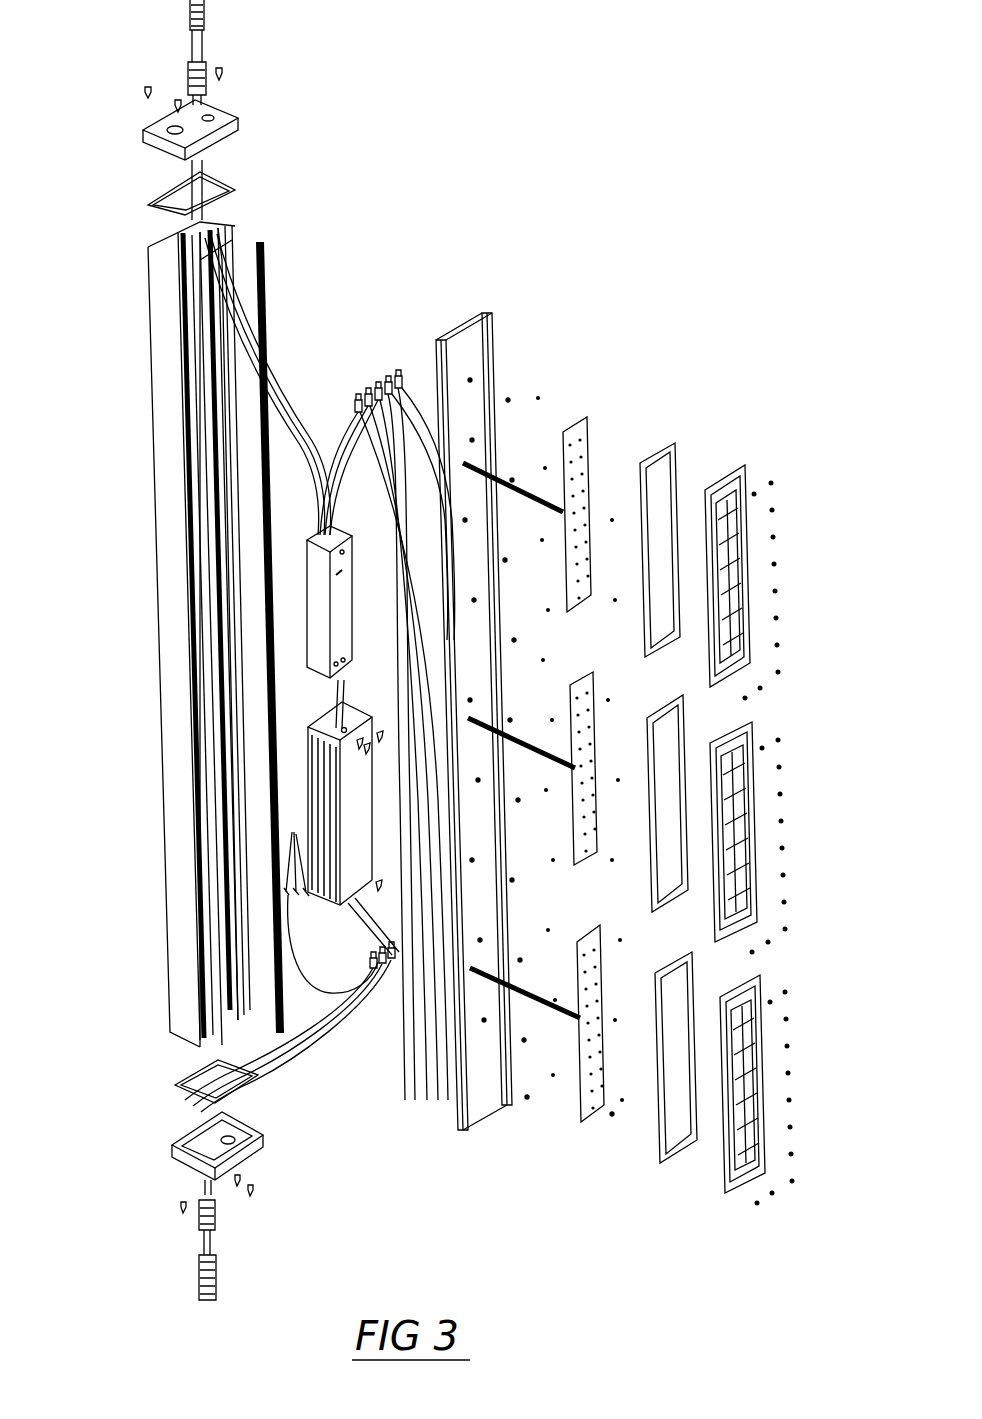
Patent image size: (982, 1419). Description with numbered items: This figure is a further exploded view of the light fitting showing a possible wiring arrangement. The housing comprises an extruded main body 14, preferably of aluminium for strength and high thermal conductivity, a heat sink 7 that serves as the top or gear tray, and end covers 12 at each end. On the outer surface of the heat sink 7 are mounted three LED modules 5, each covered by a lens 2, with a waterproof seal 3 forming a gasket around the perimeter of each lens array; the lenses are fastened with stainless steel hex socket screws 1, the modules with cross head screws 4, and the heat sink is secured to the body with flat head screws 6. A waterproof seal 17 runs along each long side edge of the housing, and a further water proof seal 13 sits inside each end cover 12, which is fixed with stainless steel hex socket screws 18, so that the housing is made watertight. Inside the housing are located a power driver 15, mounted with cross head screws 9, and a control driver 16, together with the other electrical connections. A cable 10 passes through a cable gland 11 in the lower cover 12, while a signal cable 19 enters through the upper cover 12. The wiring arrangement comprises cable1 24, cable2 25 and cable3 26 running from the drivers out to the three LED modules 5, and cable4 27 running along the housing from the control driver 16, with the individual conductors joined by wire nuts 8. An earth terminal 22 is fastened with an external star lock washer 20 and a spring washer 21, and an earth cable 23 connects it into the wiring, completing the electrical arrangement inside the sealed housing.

The stainless steel hex socket screw 1 is at (793, 1186).
The lens 2 is at (738, 1198).
The waterproof seal 1 (gasket 1) 3 is at (669, 1165).
The cross head screw 4 is at (612, 1118).
The LED module 5 is at (580, 1125).
The flat head screw 6 is at (525, 1101).
The heat sink 7 is at (453, 1114).
The wire nut 8 is at (396, 372).
The cross head screw 9 is at (380, 878).
The cable 10 is at (197, 1279).
The cable gland 11 is at (197, 1216).
The cover 12 is at (173, 1146).
The water proof seal 2 13 is at (180, 1080).
The main body 14 is at (190, 998).
The power driver 15 is at (314, 727).
The control driver 16 is at (316, 600).
The water proof seal 3 17 is at (268, 243).
The stainless steel hex socket screw 18 is at (143, 89).
The signal cable 19 is at (188, 18).
The external star lock washer 20 is at (290, 836).
The spring washer 21 is at (290, 813).
The earth terminal 22 is at (290, 790).
The earth cable 23 is at (326, 988).
The cable1 24 is at (532, 1003).
The cable2 25 is at (520, 742).
The cable3 26 is at (516, 480).
The cable4 27 is at (333, 447).